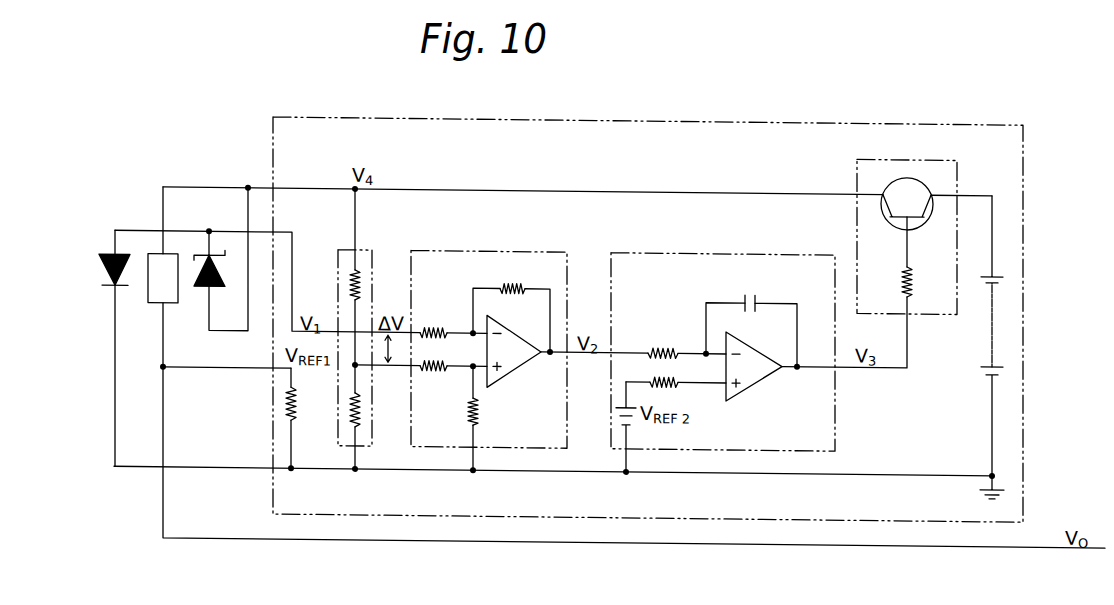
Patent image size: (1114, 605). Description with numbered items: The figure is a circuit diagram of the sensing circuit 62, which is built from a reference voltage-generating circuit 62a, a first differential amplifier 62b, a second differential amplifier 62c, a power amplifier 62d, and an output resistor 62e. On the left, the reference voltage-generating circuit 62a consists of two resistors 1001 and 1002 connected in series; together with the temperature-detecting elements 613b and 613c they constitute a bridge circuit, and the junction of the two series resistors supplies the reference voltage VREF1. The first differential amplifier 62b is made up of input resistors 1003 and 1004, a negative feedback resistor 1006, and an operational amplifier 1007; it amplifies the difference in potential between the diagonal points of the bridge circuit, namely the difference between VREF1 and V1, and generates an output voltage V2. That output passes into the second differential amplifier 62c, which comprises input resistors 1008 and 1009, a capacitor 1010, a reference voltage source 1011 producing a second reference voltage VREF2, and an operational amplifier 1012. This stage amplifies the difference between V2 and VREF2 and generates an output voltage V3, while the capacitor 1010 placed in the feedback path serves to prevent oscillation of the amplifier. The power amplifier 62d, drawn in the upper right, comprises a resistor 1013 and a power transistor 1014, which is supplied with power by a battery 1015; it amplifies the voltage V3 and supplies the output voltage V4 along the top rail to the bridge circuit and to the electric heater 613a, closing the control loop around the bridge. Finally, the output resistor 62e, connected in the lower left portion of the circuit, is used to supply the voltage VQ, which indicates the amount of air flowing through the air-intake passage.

The sensing circuit 62 is at (882, 112).
The reference voltage-generating circuit 62a is at (372, 246).
The first differential amplifier 62b is at (508, 244).
The second differential amplifier 62c is at (710, 244).
The power amplifier 62d is at (885, 153).
The output resistor 62e is at (288, 399).
The electric heater 613a is at (175, 301).
The temperature-detecting element 613b is at (122, 251).
The temperature-detecting element 613c is at (200, 248).
The resistor 1001 is at (350, 276).
The resistor 1002 is at (352, 423).
The input resistor 1003 is at (440, 323).
The input resistor 1004 is at (440, 366).
The negative feedback resistor 1006 is at (508, 284).
The operational amplifier 1007 is at (517, 362).
The input resistor 1008 is at (668, 341).
The input resistor 1009 is at (678, 377).
The capacitor 1010 is at (752, 288).
The reference voltage source 1011 is at (612, 408).
The operational amplifier 1012 is at (768, 367).
The resistor 1013 is at (912, 284).
The power transistor 1014 is at (935, 185).
The battery 1015 is at (993, 301).